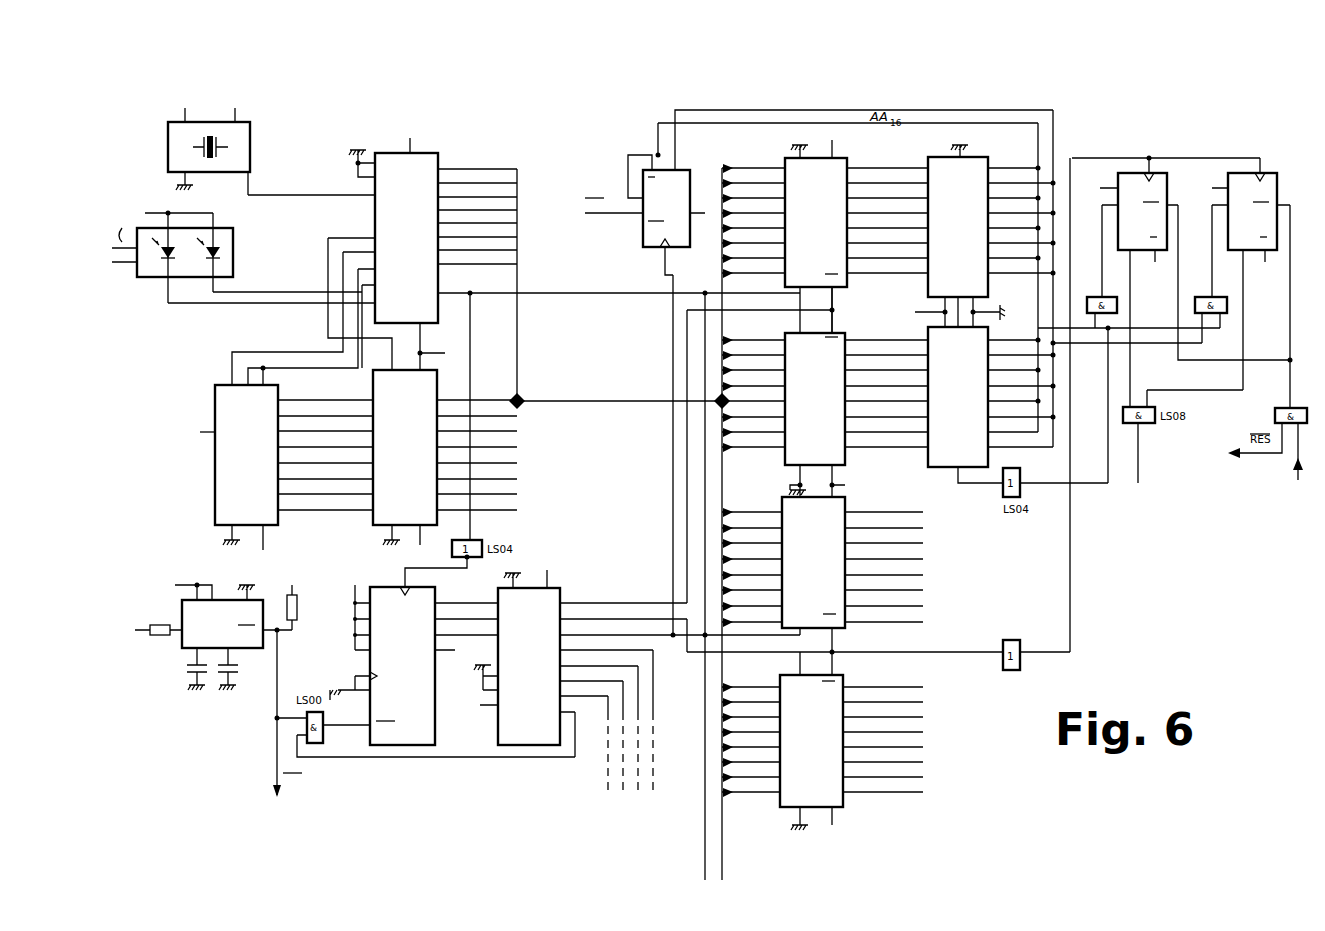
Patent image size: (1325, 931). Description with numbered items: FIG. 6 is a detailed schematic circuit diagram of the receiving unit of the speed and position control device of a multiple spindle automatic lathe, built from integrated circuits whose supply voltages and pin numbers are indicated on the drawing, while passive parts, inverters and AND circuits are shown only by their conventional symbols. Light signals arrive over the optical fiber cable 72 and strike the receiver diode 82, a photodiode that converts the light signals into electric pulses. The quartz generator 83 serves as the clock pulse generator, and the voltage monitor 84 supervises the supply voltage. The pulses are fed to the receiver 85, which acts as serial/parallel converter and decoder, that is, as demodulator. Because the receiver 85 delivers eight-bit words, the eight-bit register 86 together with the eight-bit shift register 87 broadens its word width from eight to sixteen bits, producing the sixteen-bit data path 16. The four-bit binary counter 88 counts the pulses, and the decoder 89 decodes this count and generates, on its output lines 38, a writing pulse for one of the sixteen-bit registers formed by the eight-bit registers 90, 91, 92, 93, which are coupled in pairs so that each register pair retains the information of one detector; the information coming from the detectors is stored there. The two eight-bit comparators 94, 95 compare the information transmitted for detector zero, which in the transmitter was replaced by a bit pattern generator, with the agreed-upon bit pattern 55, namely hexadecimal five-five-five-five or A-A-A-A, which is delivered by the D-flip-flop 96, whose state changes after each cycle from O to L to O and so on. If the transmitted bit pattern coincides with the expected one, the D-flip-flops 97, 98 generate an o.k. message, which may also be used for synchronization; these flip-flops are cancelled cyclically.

The data bus 16 is at (620, 403).
The select lines 38 is at (603, 738).
The address bus 55 is at (864, 267).
The optical fiber cable 72 is at (118, 231).
The receiver diode 82 is at (233, 263).
The quartz generator 83 is at (250, 155).
The voltage monitor 84 is at (182, 615).
The receiver 85 is at (438, 155).
The 8bit register 86 is at (373, 522).
The 8bit shift register 87 is at (215, 480).
The 4bit binary counter 88 is at (435, 672).
The decoder 89 is at (498, 730).
The 8bit register 90 is at (785, 160).
The 8bit register 91 is at (785, 455).
The 8bit register 92 is at (845, 630).
The 8bit register 93 is at (838, 800).
The 8bit comparator 94 is at (930, 160).
The 8bit comparator 95 is at (930, 458).
The D-flip-flop 96 is at (643, 240).
The D-flip-flop 97 is at (1165, 176).
The D-flip-flop 98 is at (1275, 176).